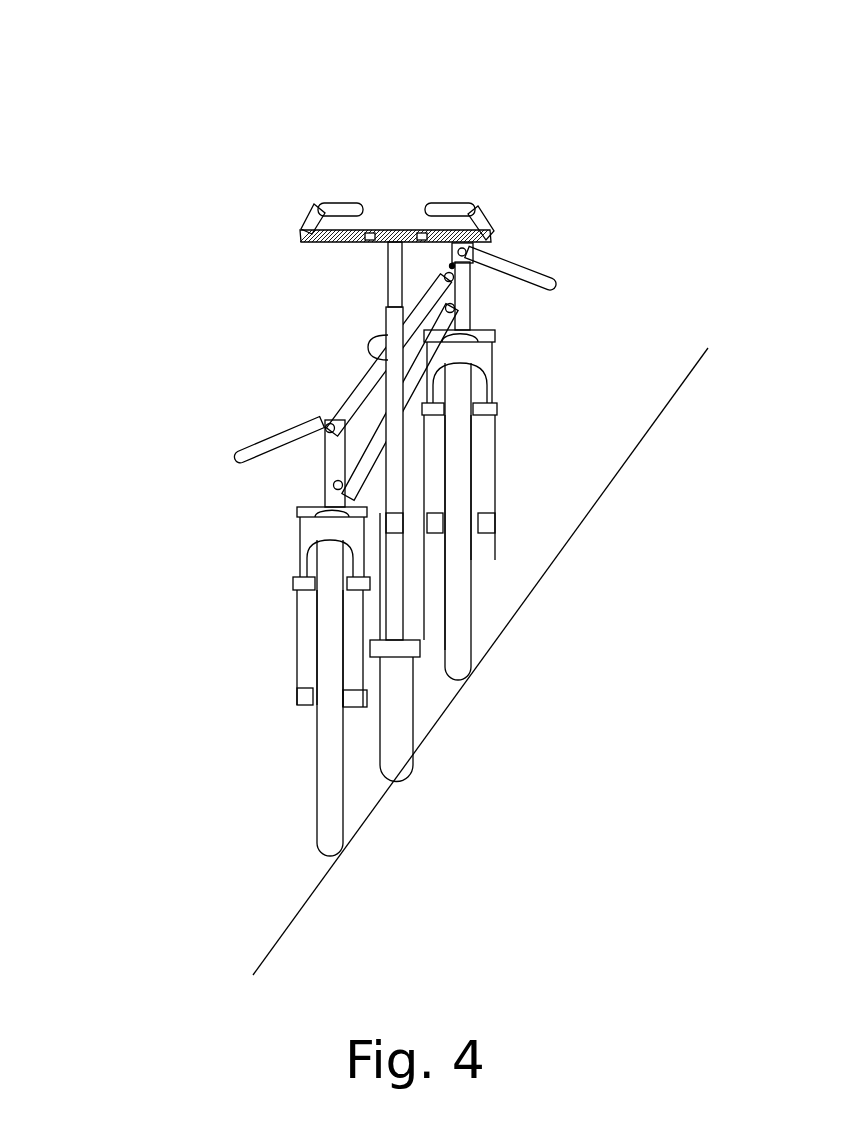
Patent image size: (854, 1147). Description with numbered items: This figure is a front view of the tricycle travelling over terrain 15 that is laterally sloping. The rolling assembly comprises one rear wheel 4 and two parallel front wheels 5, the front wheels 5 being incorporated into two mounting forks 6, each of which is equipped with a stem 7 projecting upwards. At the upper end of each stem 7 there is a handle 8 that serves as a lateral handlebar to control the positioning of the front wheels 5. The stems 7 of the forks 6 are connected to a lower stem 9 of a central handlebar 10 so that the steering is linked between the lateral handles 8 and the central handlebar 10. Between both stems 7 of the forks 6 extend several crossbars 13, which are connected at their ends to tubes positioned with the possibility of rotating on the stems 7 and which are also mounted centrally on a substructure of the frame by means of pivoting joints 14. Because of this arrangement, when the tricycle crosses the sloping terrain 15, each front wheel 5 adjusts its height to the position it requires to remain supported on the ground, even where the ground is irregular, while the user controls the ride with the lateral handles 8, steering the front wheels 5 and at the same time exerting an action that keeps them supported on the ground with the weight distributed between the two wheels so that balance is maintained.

The rear wheel 4 is at (397, 752).
The front wheels 5 is at (460, 645).
The mounting forks 6 is at (483, 448).
The stems 7 is at (463, 300).
The handles 8 is at (530, 272).
The lower stem 9 is at (393, 277).
The central handlebar 10 is at (386, 237).
The crossbars 13 is at (365, 442).
The pivoting joints 14 is at (338, 487).
The terrain 15 is at (557, 558).